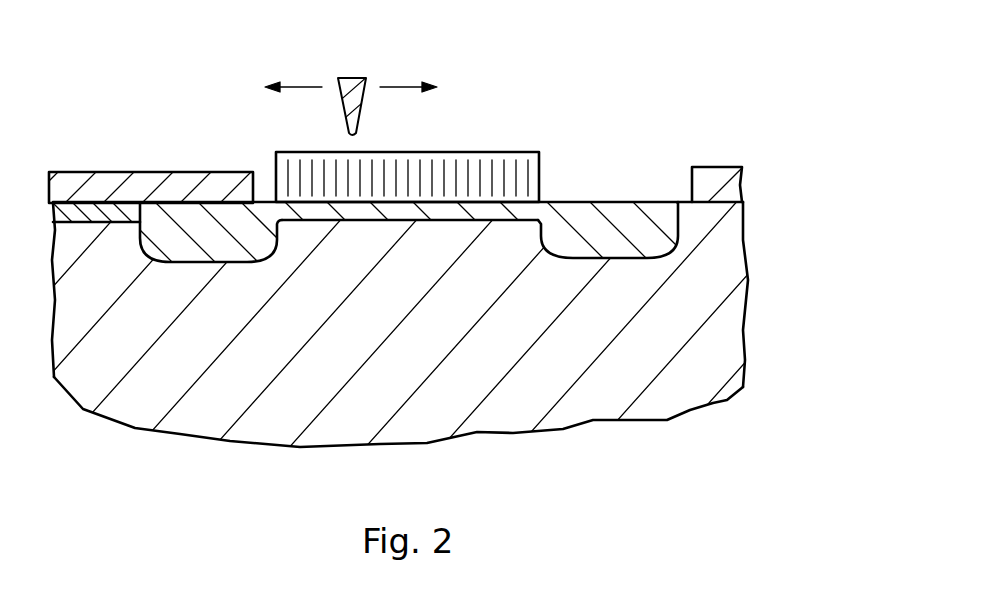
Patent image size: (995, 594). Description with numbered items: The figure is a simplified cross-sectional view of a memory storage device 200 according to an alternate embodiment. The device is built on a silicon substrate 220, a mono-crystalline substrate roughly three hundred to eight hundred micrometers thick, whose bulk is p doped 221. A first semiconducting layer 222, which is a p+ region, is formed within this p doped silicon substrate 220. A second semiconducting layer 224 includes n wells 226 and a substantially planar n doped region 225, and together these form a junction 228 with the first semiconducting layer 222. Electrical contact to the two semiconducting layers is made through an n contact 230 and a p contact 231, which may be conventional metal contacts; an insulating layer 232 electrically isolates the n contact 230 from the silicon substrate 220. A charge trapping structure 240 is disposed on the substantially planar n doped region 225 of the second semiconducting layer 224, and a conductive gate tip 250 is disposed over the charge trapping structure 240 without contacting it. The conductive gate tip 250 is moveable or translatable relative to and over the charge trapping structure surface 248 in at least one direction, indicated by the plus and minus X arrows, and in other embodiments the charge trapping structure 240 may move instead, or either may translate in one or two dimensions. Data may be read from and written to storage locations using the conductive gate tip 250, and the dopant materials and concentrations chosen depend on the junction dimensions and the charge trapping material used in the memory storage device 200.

The memory storage device 200 is at (531, 37).
The silicon substrate 220 is at (495, 413).
The p doped region 221 is at (197, 417).
The first semiconducting layer 222 is at (503, 242).
The second semiconducting layer 224 is at (188, 222).
The substantially planar n doped region 225 is at (405, 213).
The n wells 226 is at (232, 222).
The junction 228 is at (468, 220).
The n contact 230 is at (147, 185).
The p contact 231 is at (716, 180).
The insulating layer 232 is at (106, 222).
The charge trapping structure 240 is at (318, 168).
The charge trapping structure surface 248 is at (342, 156).
The conductive gate tip 250 is at (343, 78).